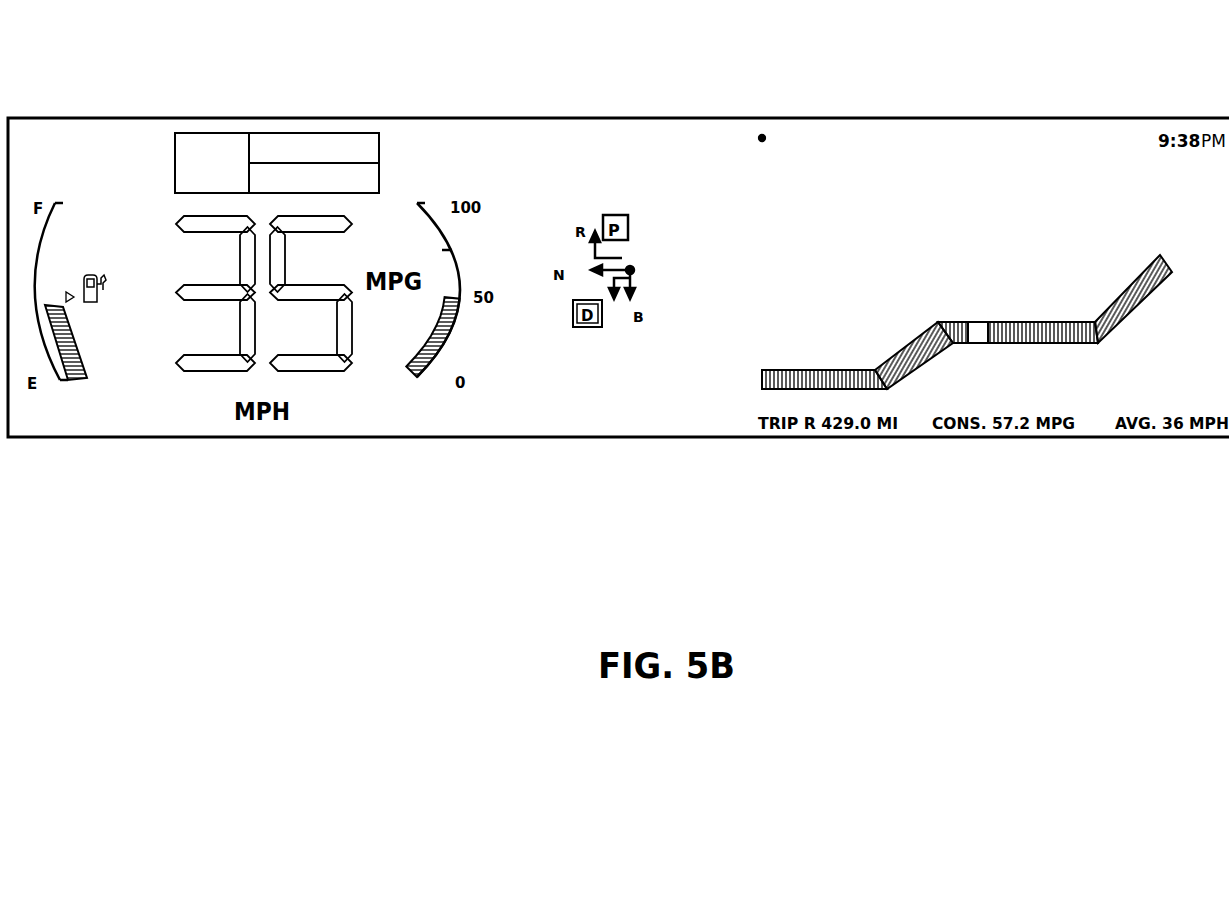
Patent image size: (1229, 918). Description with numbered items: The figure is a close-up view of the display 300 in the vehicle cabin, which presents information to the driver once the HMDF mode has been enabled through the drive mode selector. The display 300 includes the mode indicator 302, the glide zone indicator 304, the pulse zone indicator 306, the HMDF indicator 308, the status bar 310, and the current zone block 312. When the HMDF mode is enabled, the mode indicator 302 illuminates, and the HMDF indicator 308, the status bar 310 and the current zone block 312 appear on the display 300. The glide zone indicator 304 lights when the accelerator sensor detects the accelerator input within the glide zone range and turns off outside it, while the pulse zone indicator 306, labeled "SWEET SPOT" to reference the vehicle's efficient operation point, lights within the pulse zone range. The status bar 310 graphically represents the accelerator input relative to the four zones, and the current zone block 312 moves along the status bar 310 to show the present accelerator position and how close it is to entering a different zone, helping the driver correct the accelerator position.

The display 300 is at (600, 117).
The mode indicator 302 is at (211, 131).
The glide zone indicator 304 is at (367, 131).
The pulse zone indicator 306 is at (381, 174).
The HMDF indicator 308 is at (820, 117).
The status bar 310 is at (1125, 288).
The current zone block 312 is at (978, 320).